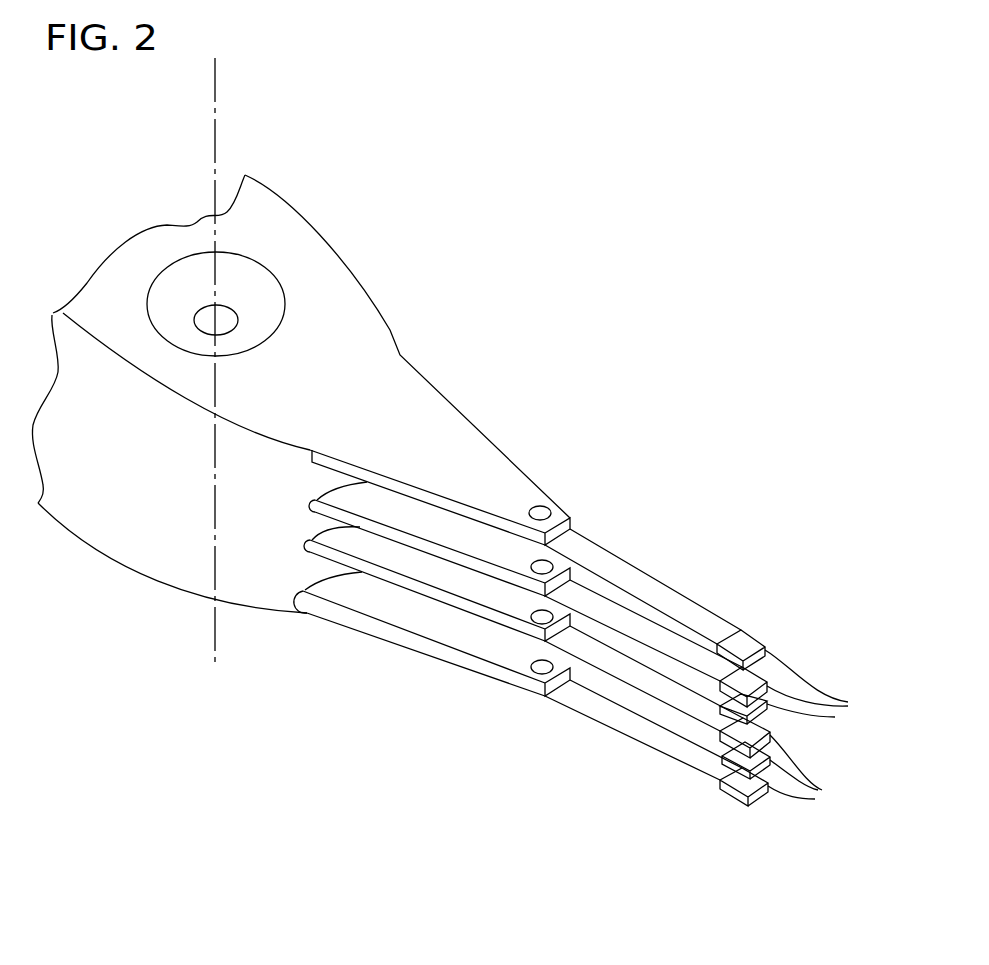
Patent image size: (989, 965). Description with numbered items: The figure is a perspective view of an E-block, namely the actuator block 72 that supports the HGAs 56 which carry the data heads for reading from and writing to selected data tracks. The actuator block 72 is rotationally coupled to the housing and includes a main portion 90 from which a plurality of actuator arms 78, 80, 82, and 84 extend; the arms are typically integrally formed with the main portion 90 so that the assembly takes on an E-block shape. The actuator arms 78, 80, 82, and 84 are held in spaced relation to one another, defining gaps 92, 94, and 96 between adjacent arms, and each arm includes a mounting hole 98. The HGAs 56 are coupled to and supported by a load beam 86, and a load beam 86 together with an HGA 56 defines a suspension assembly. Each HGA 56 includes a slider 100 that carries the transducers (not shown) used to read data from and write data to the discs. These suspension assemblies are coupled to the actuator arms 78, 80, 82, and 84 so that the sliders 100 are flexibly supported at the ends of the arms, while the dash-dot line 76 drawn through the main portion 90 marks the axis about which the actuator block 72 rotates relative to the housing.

The HGA 56 is at (720, 668).
The actuator block 72 is at (548, 354).
The pivot axis 76 is at (217, 162).
The actuator arm 78 is at (504, 470).
The actuator arm 80 is at (486, 562).
The actuator arm 82 is at (496, 615).
The actuator arm 84 is at (499, 667).
The load beam 86 is at (648, 718).
The main portion 90 is at (363, 345).
The gap 92 is at (457, 535).
The gap 94 is at (450, 582).
The gap 96 is at (460, 630).
The mounting hole 98 is at (558, 496).
The slider 100 is at (813, 798).